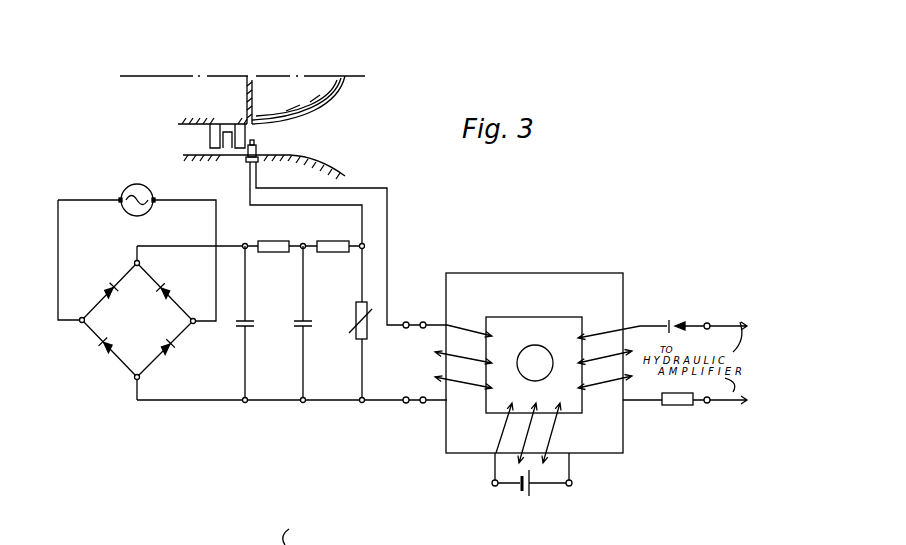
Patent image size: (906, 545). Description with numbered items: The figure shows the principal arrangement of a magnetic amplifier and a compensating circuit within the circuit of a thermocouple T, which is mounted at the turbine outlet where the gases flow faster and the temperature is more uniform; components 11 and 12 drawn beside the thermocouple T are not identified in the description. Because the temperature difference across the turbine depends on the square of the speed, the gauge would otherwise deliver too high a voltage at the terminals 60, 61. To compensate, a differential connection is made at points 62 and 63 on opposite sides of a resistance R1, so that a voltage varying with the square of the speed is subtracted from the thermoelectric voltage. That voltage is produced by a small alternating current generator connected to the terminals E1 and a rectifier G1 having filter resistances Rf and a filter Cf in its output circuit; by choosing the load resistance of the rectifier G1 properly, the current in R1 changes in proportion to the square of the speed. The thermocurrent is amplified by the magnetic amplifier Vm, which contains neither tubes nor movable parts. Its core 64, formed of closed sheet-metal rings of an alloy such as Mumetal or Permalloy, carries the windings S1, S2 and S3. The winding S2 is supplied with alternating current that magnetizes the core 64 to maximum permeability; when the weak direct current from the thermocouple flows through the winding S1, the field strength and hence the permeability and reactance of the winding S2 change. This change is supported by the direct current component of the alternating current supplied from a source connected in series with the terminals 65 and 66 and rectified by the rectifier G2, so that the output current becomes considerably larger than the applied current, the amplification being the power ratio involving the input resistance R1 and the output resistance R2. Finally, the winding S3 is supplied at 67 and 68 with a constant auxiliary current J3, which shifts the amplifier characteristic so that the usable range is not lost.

The pole piece / armature of magnetic pickup 11 is at (229, 150).
The magnetic pickup pole pieces 12 is at (233, 123).
The thermocouple T is at (262, 144).
The terminals E1 is at (137, 189).
The rectifier G1 is at (138, 320).
The filter resistances Rf is at (338, 252).
The filter Cf is at (256, 324).
The resistance R1 is at (352, 323).
The terminal 60 is at (414, 314).
The terminal 61 is at (414, 390).
The point of differential connection 62 is at (358, 415).
The point of differential connection 63 is at (374, 247).
The core 64 is at (592, 282).
The magnetic amplifier Vm is at (535, 363).
The winding S1 is at (463, 357).
The winding S2 is at (622, 358).
The winding S3 is at (557, 430).
The rectifier G2 is at (702, 315).
The terminal 65 is at (708, 339).
The terminal 66 is at (708, 389).
The resistance R2 is at (668, 406).
The terminal 67 is at (497, 498).
The terminal 68 is at (570, 498).
The auxiliary current J3 is at (530, 488).